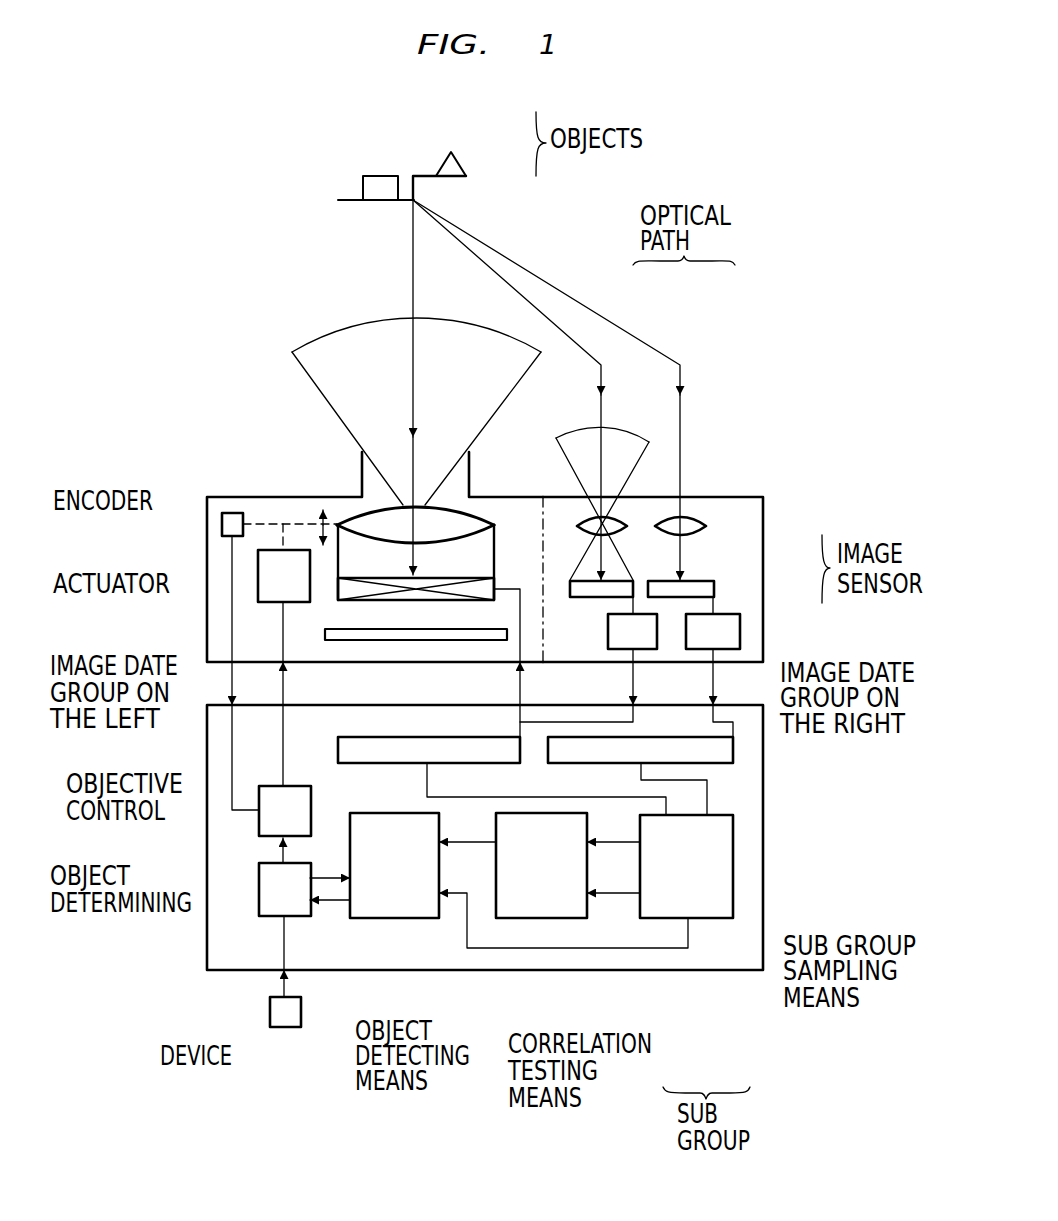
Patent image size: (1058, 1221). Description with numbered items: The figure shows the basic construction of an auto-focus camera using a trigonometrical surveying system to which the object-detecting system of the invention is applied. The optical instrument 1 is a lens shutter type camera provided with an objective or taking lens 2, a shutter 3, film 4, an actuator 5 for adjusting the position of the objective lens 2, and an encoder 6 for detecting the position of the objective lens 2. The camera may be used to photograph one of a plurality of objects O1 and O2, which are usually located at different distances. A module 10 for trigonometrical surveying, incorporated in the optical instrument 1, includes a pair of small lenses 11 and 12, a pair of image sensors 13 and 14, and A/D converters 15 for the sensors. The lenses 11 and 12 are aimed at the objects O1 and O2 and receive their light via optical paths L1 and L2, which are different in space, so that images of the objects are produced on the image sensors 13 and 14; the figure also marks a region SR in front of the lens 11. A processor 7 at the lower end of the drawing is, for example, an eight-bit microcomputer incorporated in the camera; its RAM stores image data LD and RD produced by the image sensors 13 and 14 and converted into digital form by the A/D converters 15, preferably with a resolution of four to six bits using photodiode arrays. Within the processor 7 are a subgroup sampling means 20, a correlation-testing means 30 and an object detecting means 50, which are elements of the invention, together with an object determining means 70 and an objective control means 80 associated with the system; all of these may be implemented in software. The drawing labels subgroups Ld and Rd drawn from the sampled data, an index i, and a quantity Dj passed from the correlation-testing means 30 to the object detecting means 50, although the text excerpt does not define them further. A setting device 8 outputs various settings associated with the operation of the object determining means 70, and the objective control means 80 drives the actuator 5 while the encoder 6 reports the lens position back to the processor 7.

The optical instrument 1 is at (213, 497).
The objective lens 2 is at (480, 520).
The shutter 3 is at (478, 578).
The film 4 is at (468, 640).
The actuator 5 is at (258, 597).
The encoder 6 is at (222, 529).
The processor 7 is at (207, 960).
The setting device 8 is at (268, 1022).
The module for trigonometrical surveying 10 is at (760, 497).
The small lens 11 is at (615, 522).
The small lens 12 is at (690, 518).
The image sensor 13 is at (635, 582).
The image sensor 14 is at (714, 591).
The A/D converters 15 is at (690, 652).
The subgroup sampling means 20 is at (733, 913).
The correlation-testing means 30 is at (515, 918).
The object detecting means 50 is at (375, 918).
The object determining means 70 is at (258, 912).
The objective control means 80 is at (258, 830).
The object O1 is at (392, 176).
The object O2 is at (458, 164).
The optical path L1 is at (607, 315).
The optical path L2 is at (651, 346).
The sensing region SR is at (578, 428).
The image data LD is at (338, 750).
The image data RD is at (733, 750).
The sub group (left) Ld is at (613, 843).
The sub group (right) Rd is at (625, 894).
The defocus amount Dj is at (470, 848).
The sub group index i is at (688, 950).